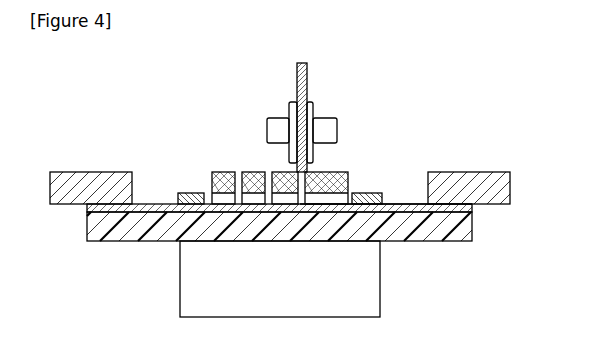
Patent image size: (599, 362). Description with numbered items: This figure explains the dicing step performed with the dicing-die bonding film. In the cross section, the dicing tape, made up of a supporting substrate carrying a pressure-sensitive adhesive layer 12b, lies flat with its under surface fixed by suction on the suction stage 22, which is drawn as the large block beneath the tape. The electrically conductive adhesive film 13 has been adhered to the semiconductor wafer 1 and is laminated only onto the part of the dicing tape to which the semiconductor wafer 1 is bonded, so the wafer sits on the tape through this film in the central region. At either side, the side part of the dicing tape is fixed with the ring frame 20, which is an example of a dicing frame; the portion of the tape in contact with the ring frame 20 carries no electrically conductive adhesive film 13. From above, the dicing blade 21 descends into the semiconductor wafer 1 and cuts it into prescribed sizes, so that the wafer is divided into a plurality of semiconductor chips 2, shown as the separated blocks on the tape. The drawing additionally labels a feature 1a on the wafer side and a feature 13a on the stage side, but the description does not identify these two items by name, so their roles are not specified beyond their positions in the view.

The semiconductor wafer 1 is at (350, 197).
The die attach layer 1a is at (362, 193).
The semiconductor chips 2 is at (214, 171).
The pressure-sensitive adhesive layer 12b is at (473, 208).
The electrically conductive adhesive film 13 is at (383, 200).
The stage base plate 13a is at (473, 228).
The ring frame 20 is at (478, 172).
The dicing blade 21 is at (308, 80).
The suction stage 22 is at (381, 278).